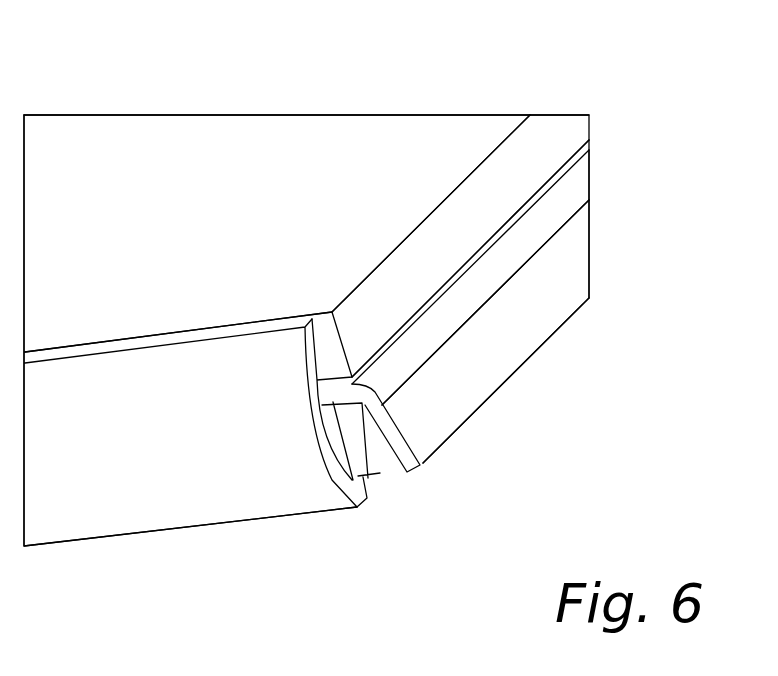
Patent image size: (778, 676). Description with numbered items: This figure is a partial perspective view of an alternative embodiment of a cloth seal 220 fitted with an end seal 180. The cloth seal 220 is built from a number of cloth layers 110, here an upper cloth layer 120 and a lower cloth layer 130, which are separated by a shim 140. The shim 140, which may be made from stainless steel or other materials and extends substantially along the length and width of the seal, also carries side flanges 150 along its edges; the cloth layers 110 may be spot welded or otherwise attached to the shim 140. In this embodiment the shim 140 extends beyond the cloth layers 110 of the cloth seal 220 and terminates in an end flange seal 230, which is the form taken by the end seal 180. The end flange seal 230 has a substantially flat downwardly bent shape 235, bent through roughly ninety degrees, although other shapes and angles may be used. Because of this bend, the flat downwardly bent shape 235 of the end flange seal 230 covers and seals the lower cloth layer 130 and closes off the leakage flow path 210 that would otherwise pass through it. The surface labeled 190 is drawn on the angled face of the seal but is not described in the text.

The cloth seal 220 is at (86, 81).
The cloth layers 110 is at (478, 108).
The upper cloth layer 120 is at (348, 155).
The angled face 190 is at (548, 135).
The shim 140 is at (602, 145).
The flat downwardly bent shape 235 is at (492, 397).
The end flange seal 230 is at (467, 420).
The leakage flow path 210 is at (598, 368).
The end seal 180 is at (455, 455).
The lower cloth layer 130 is at (370, 500).
The side flanges 150 is at (157, 548).